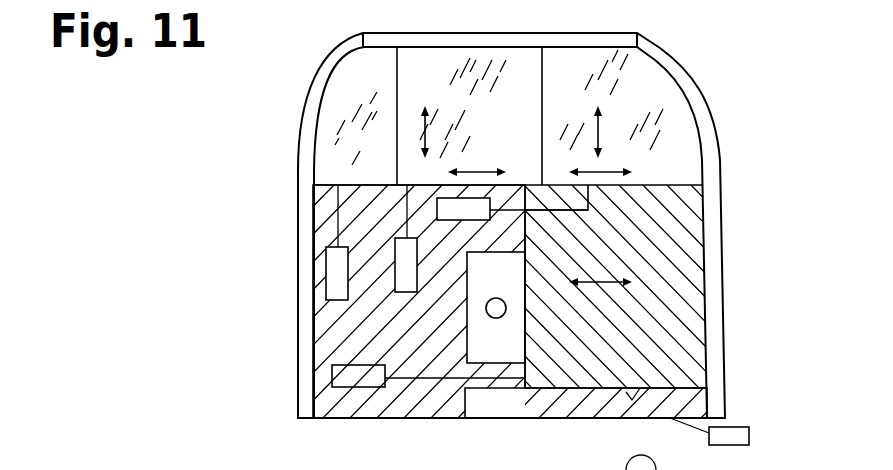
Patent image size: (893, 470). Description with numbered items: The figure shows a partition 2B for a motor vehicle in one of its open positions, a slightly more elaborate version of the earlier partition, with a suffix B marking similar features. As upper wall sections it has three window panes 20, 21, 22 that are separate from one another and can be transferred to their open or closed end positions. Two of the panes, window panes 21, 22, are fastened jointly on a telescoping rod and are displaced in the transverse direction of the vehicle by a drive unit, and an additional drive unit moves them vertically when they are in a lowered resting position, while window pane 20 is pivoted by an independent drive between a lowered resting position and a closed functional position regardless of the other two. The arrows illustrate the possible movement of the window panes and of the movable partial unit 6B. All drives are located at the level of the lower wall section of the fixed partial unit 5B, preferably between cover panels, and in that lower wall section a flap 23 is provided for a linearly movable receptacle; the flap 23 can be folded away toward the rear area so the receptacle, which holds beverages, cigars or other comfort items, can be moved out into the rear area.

The partition 2B is at (612, 24).
The window pane 20 is at (372, 144).
The window pane 21 is at (463, 70).
The window pane 22 is at (640, 140).
The fixed partial unit 5B is at (333, 345).
The movable partial unit 6B is at (690, 275).
The flap 23 is at (500, 335).